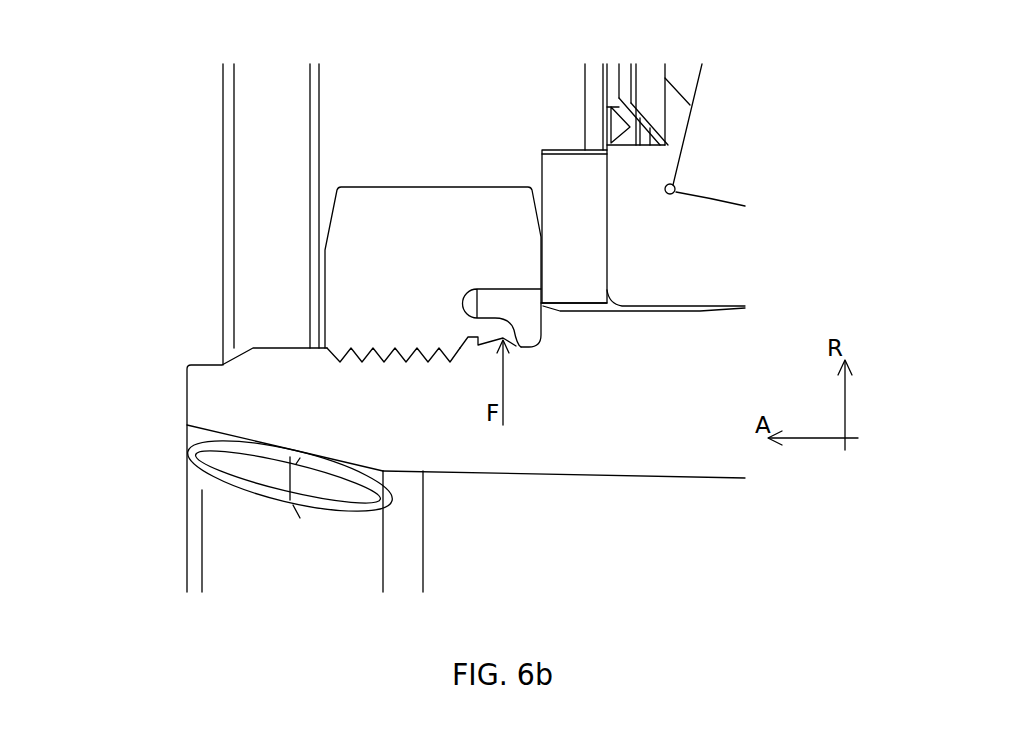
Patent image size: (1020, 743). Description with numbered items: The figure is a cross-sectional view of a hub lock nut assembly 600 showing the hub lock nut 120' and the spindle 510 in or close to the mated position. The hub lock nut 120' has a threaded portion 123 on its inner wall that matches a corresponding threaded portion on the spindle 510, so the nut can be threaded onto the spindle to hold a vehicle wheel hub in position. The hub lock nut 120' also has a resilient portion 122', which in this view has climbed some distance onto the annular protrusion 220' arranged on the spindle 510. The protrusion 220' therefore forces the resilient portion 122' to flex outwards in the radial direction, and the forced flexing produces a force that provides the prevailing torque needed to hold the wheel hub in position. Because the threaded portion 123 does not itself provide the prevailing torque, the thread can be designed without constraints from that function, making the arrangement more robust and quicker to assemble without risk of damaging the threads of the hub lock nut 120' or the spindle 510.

The hub lock nut assembly 600 is at (142, 66).
The hub lock nut 120' is at (433, 267).
The resilient portion 122' is at (502, 288).
The threaded portion 123 is at (388, 343).
The annular protrusion 220' is at (545, 355).
The spindle 510 is at (606, 433).